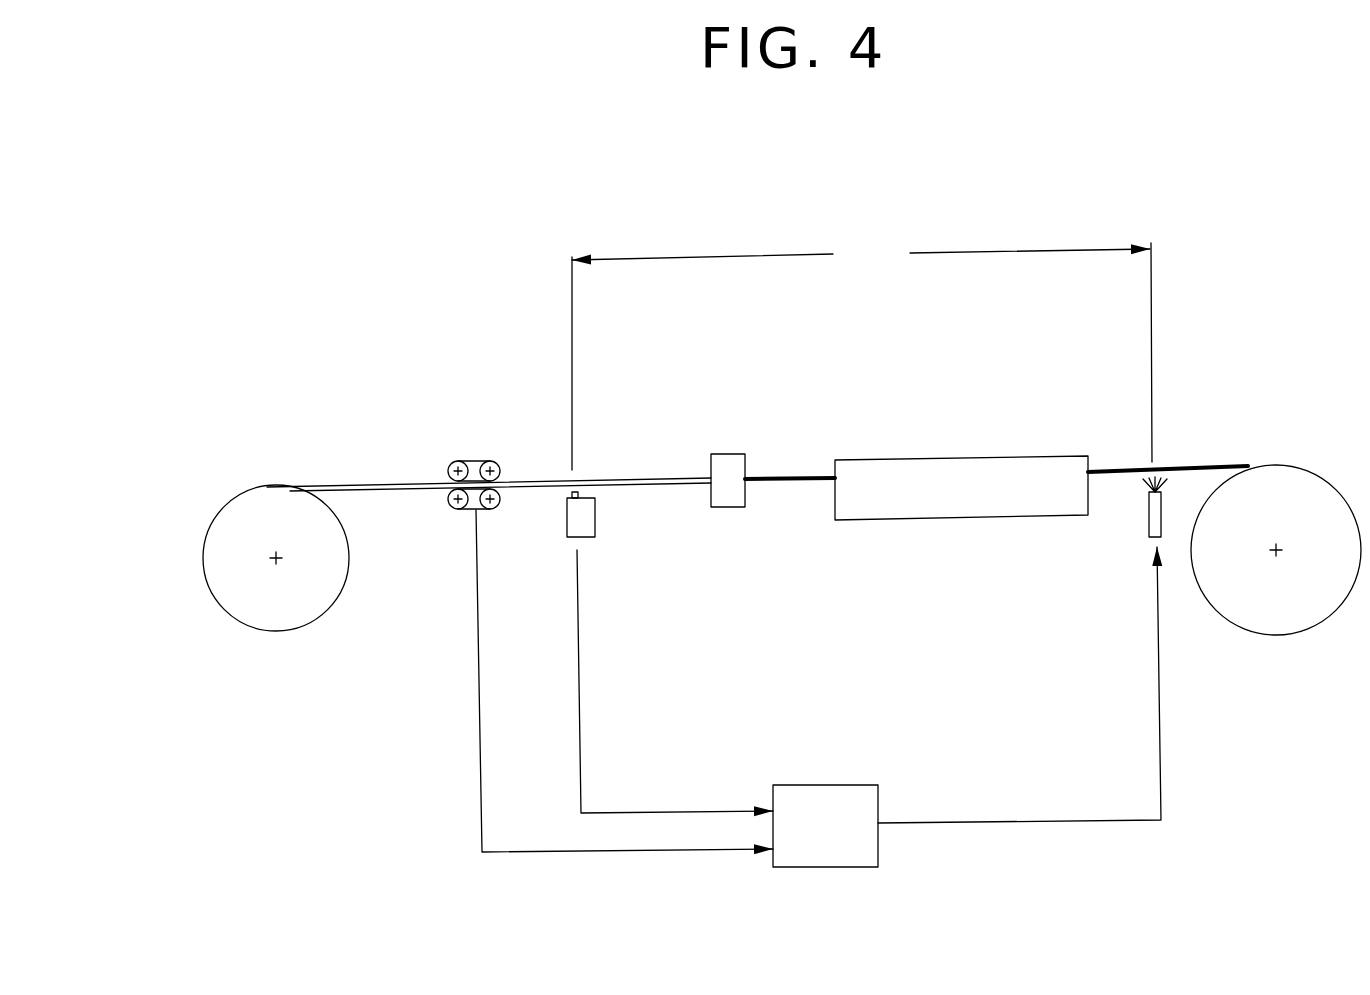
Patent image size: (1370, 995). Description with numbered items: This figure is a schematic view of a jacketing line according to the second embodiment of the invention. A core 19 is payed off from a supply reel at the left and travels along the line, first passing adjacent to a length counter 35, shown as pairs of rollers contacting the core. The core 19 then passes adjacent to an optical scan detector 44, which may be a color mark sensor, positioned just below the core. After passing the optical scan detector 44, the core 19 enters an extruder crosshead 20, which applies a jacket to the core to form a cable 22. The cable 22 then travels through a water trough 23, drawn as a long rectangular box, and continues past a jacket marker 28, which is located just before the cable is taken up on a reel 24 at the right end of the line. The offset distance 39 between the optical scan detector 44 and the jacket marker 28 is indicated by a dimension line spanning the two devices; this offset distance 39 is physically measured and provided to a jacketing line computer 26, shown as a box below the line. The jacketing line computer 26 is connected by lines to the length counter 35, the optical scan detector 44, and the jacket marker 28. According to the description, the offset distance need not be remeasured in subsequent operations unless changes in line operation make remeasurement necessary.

The core 19 is at (361, 476).
The length counter 35 is at (473, 450).
The optical scan detector 44 is at (611, 520).
The extruder crosshead 20 is at (733, 457).
The cable 22 is at (792, 492).
The water trough 23 is at (961, 468).
The jacket marker 28 is at (1145, 515).
The reel 24 is at (1276, 571).
The offset distance 39 is at (862, 352).
The jacketing line computer 26 is at (825, 826).